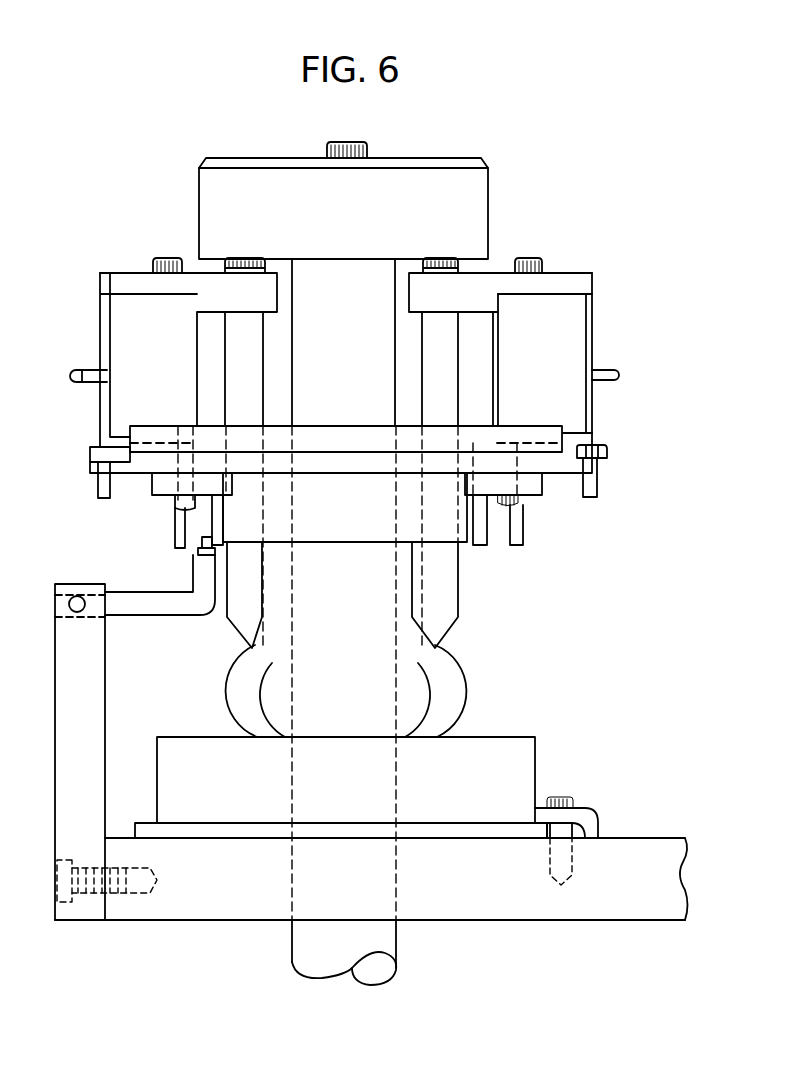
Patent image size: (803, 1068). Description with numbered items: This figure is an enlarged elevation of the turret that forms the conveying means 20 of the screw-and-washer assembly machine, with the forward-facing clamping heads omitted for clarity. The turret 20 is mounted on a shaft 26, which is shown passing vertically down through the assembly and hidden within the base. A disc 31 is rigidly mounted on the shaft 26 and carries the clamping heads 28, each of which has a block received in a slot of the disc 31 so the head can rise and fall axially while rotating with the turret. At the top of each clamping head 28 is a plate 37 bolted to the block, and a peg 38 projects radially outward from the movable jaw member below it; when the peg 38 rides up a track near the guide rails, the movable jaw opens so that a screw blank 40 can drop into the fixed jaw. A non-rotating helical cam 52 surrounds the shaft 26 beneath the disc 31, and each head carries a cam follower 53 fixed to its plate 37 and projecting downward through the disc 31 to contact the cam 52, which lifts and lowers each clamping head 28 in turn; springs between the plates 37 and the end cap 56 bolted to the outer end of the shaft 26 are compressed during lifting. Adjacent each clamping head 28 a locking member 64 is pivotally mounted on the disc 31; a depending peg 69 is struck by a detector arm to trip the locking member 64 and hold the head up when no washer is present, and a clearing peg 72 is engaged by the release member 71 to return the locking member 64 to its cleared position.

The conveying means 20 is at (110, 527).
The shaft 26 is at (395, 940).
The clamping head 28 is at (127, 266).
The disc 31 is at (362, 434).
The plate 37 is at (557, 277).
The peg 38 is at (614, 371).
The screw blank 40 is at (598, 500).
The helical cam 52 is at (452, 690).
The cam follower 53 is at (230, 622).
The end cap 56 is at (470, 185).
The locking member 64 is at (538, 490).
The peg 69 is at (175, 527).
The release member 71 is at (200, 568).
The clearing peg 72 is at (220, 538).